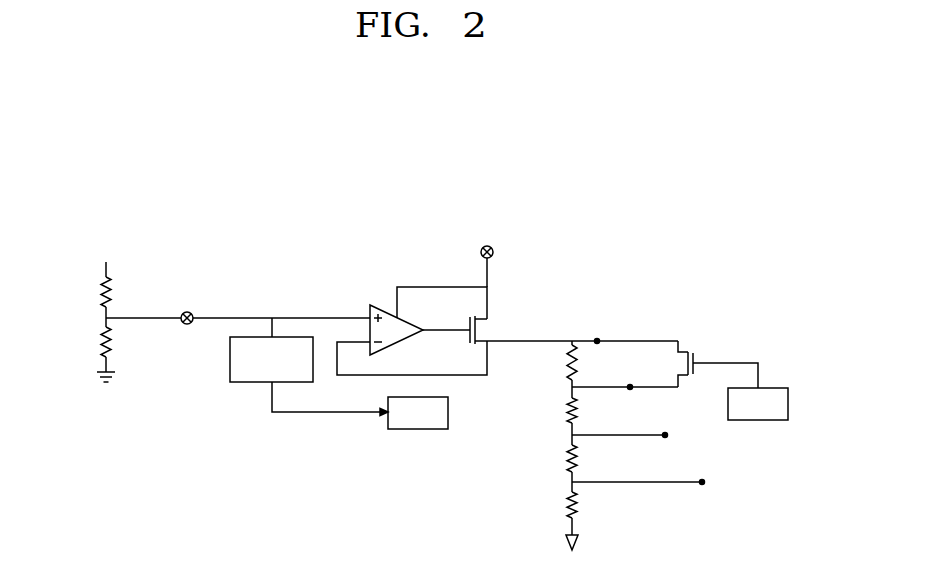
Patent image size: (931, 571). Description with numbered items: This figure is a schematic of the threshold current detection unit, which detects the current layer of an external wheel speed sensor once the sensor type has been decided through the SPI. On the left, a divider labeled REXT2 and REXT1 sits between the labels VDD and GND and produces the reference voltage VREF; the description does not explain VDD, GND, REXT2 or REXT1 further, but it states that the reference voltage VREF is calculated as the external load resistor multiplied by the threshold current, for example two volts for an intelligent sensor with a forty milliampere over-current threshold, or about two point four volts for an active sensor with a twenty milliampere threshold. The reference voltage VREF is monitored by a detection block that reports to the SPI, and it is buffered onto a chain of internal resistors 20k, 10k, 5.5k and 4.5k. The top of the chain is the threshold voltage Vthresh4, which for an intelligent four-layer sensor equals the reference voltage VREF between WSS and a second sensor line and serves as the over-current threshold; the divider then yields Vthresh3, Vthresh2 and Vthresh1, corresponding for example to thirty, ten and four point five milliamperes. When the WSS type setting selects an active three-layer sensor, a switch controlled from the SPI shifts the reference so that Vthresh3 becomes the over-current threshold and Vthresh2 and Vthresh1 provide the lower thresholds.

The supply voltage node VDD is at (296, 257).
The external resistor 2 REXT2 is at (81, 297).
The external resistor 1 REXT1 is at (81, 345).
The ground GND is at (106, 389).
The reference voltage VREF is at (247, 357).
The element SPI is at (588, 408).
The threshold voltage Vthresh4 is at (640, 336).
The threshold voltage Vthresh3 is at (630, 378).
The threshold voltage Vthresh2 is at (620, 426).
The threshold voltage Vthresh1 is at (638, 473).
The internal resistor of 20 k ohms 20k is at (547, 364).
The internal resistor of 10 k ohms 10k is at (547, 411).
The internal resistor of 5.5 k ohms 5.5k is at (544, 458).
The internal resistor of 4.5 k ohms 4.5k is at (544, 516).
The wheel speed sensor terminal WSS is at (723, 365).